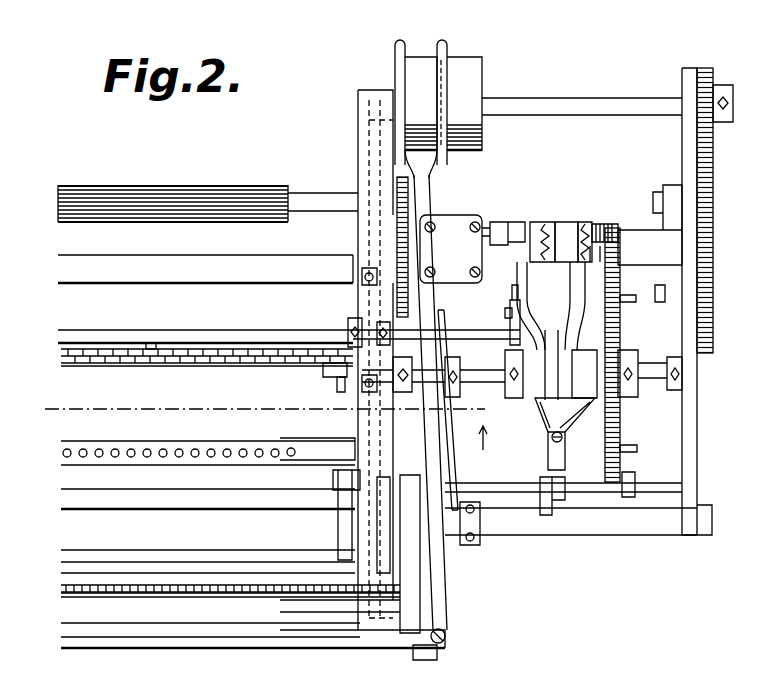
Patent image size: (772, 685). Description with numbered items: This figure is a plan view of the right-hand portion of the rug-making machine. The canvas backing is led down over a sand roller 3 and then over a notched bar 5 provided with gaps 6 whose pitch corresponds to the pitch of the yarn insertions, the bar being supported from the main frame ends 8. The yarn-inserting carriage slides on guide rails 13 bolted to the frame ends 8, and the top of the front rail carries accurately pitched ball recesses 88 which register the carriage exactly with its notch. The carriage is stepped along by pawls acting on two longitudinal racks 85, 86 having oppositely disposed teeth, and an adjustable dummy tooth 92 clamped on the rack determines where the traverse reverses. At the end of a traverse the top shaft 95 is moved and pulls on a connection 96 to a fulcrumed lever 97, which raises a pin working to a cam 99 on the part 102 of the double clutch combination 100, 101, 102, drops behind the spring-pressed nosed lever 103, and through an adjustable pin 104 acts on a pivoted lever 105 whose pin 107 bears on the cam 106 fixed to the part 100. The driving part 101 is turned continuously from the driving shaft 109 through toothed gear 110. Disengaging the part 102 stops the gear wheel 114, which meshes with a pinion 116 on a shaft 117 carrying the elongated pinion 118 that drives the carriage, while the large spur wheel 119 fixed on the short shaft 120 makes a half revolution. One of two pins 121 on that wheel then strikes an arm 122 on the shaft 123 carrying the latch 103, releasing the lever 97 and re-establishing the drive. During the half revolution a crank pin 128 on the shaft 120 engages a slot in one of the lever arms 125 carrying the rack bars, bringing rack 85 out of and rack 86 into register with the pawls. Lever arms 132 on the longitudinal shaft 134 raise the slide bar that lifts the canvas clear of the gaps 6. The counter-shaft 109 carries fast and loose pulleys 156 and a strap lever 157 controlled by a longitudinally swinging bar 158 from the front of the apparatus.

The sand roller 3 is at (324, 616).
The notched bar 5 is at (291, 588).
The gaps 6 is at (80, 590).
The main frame ends 8 is at (261, 409).
The guide rails 13 is at (100, 263).
The rack 85 is at (115, 365).
The rack 86 is at (106, 350).
The ball recesses 88 is at (172, 449).
The dummy tooth 92 is at (152, 345).
The top shaft 95 is at (287, 334).
The connection 96 is at (512, 313).
The fulcrumed lever 97 is at (527, 374).
The cam 99 is at (514, 224).
The clutch part 100 is at (579, 229).
The driving clutch part 101 is at (553, 232).
The clutch part 102 is at (537, 224).
The nosed lever 103 is at (546, 516).
The adjustable pin 104 is at (561, 441).
The pivoted lever 105 is at (588, 374).
The cam 106 is at (605, 229).
The pin 107 is at (593, 230).
The driving shaft 109 is at (635, 102).
The toothed gear 110 is at (721, 198).
The gear wheel 114 is at (382, 289).
The pinion 116 is at (428, 207).
The shaft 117 is at (326, 208).
The elongated pinion 118 is at (104, 194).
The spur wheel 119 is at (631, 355).
The short shaft 120 is at (654, 380).
The pins 121 is at (627, 303).
The arm 122 is at (636, 478).
The shaft 123 is at (566, 494).
The lever arms 125 is at (325, 369).
The crank pin 128 is at (338, 385).
The lever arms 132 is at (345, 529).
The longitudinal shaft 134 is at (204, 500).
The fast and loose pulleys 156 is at (477, 68).
The strap lever 157 is at (420, 286).
The longitudinally swinging bar 158 is at (205, 646).